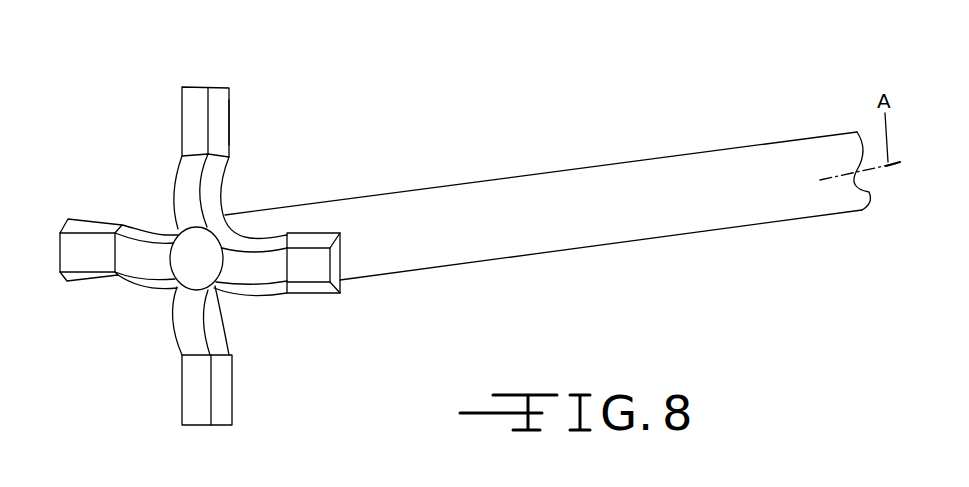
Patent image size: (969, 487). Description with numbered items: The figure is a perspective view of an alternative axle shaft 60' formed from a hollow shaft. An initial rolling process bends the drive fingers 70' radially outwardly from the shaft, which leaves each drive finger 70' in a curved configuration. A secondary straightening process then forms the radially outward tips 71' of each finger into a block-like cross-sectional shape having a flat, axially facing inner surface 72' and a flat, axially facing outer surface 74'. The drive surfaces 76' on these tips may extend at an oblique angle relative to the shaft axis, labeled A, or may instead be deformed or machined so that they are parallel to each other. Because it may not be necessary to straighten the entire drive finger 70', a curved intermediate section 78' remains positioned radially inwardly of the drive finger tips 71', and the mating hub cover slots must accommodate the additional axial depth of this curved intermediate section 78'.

The axle shaft 60' is at (547, 178).
The drive finger 70' is at (200, 227).
The radially outward tip 71' is at (163, 94).
The inner surface 72' is at (267, 122).
The outer surface 74' is at (151, 121).
The drive surface 76' is at (261, 329).
The curved intermediate section 78' is at (192, 263).